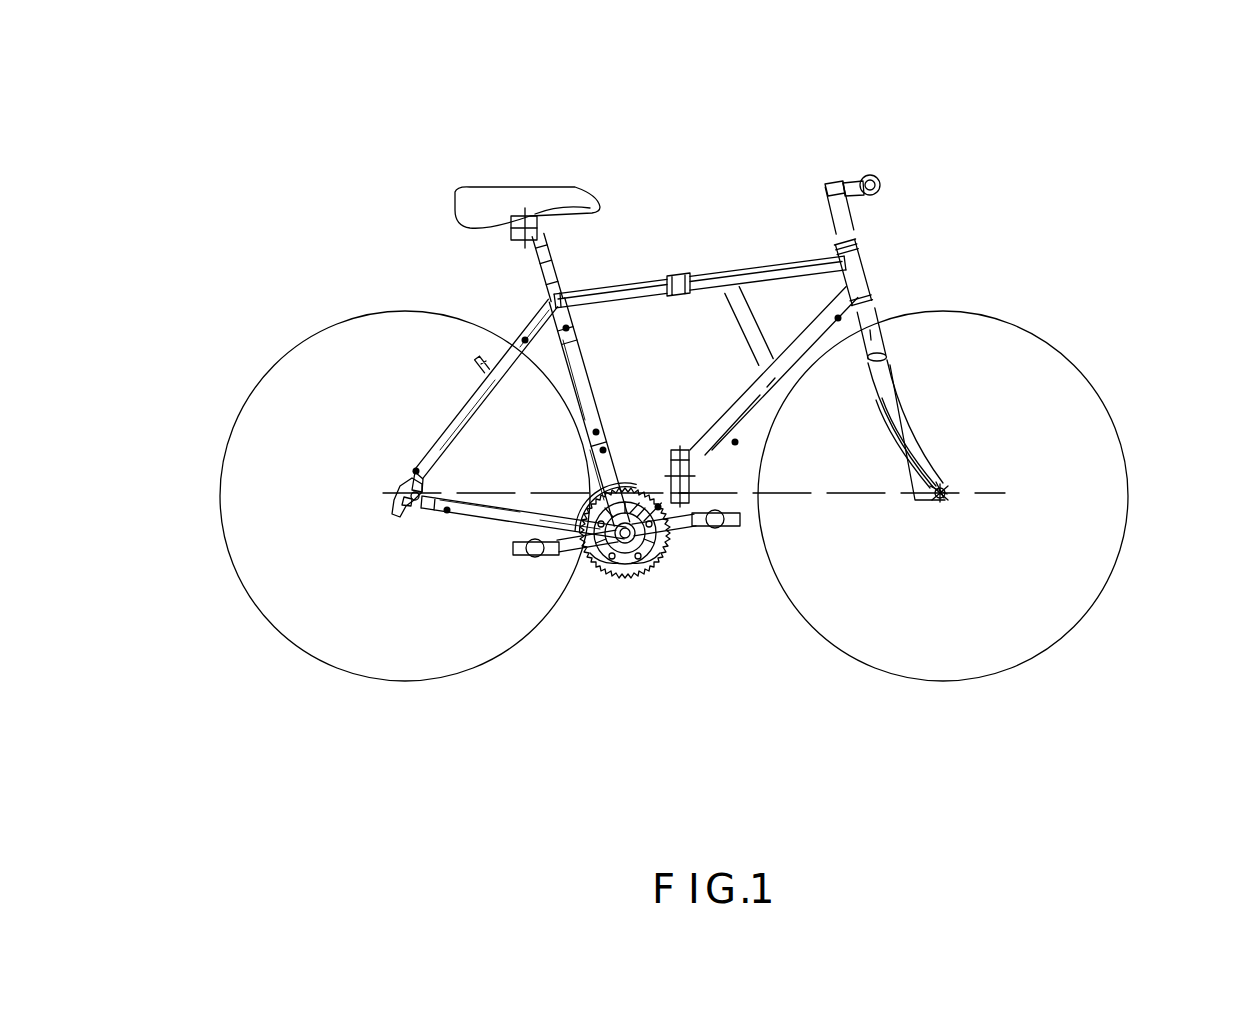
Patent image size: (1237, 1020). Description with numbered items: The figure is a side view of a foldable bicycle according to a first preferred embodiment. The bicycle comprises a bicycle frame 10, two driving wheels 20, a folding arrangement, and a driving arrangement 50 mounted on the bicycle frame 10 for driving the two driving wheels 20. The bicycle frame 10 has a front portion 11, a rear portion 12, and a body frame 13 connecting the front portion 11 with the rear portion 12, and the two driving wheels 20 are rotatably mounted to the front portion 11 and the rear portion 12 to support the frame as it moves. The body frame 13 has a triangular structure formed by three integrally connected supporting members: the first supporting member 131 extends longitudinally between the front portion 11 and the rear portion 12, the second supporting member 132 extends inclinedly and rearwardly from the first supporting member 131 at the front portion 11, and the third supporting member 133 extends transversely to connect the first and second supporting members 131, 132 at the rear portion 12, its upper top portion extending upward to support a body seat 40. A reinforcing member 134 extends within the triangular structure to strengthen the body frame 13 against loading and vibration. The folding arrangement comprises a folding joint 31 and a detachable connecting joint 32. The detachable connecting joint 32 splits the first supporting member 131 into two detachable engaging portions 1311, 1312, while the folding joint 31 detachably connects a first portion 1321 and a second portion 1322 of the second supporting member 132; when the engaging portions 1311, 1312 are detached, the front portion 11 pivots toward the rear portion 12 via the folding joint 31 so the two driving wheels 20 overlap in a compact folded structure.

The bicycle frame 10 is at (797, 135).
The front portion 11 is at (1097, 282).
The rear portion 12 is at (233, 632).
The body frame 13 is at (661, 152).
The driving wheels 20 is at (405, 643).
The folding joint 31 is at (718, 483).
The detachable connecting joint 32 is at (668, 250).
The body seat 40 is at (482, 200).
The driving arrangement 50 is at (620, 598).
The first supporting member 131 is at (708, 280).
The detachable engaging portion 1311 is at (790, 257).
The detachable engaging portion 1312 is at (607, 280).
The second supporting member 132 is at (757, 402).
The first portion 1321 is at (783, 370).
The second portion 1322 is at (600, 486).
The third supporting member 133 is at (575, 368).
The reinforcing member 134 is at (753, 327).